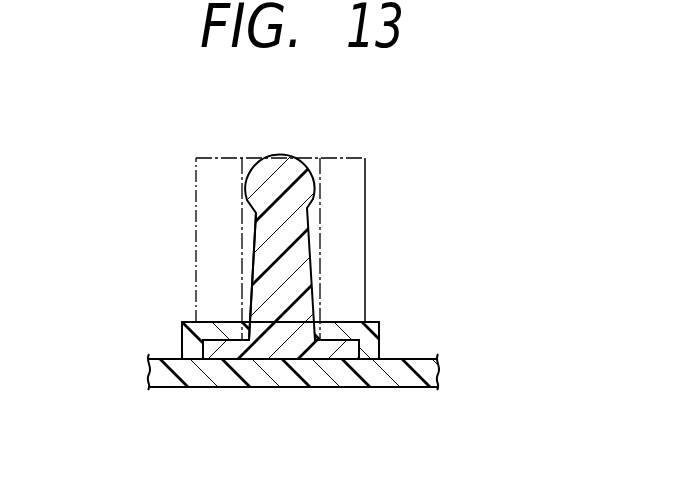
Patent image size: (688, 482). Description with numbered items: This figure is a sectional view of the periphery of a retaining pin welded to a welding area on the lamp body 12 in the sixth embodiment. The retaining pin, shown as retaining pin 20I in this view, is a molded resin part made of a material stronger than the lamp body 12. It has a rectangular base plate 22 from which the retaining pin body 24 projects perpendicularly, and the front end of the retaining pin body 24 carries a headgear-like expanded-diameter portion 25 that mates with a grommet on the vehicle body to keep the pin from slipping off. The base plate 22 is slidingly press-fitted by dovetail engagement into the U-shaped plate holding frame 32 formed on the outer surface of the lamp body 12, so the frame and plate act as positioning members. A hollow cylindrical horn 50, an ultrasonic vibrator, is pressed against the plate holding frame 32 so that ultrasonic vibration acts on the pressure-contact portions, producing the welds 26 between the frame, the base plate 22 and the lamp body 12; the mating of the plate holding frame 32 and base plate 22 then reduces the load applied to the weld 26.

The lamp body 12 is at (414, 359).
The plate holding frame 32 is at (178, 316).
The base plate 22 is at (190, 350).
The expanded-diameter portion 25 is at (283, 158).
The retaining pin body 24 is at (246, 234).
The hollow cylindrical horn 50 is at (370, 160).
The ideal hole profile 20I is at (329, 206).
The weld 26 is at (228, 341).